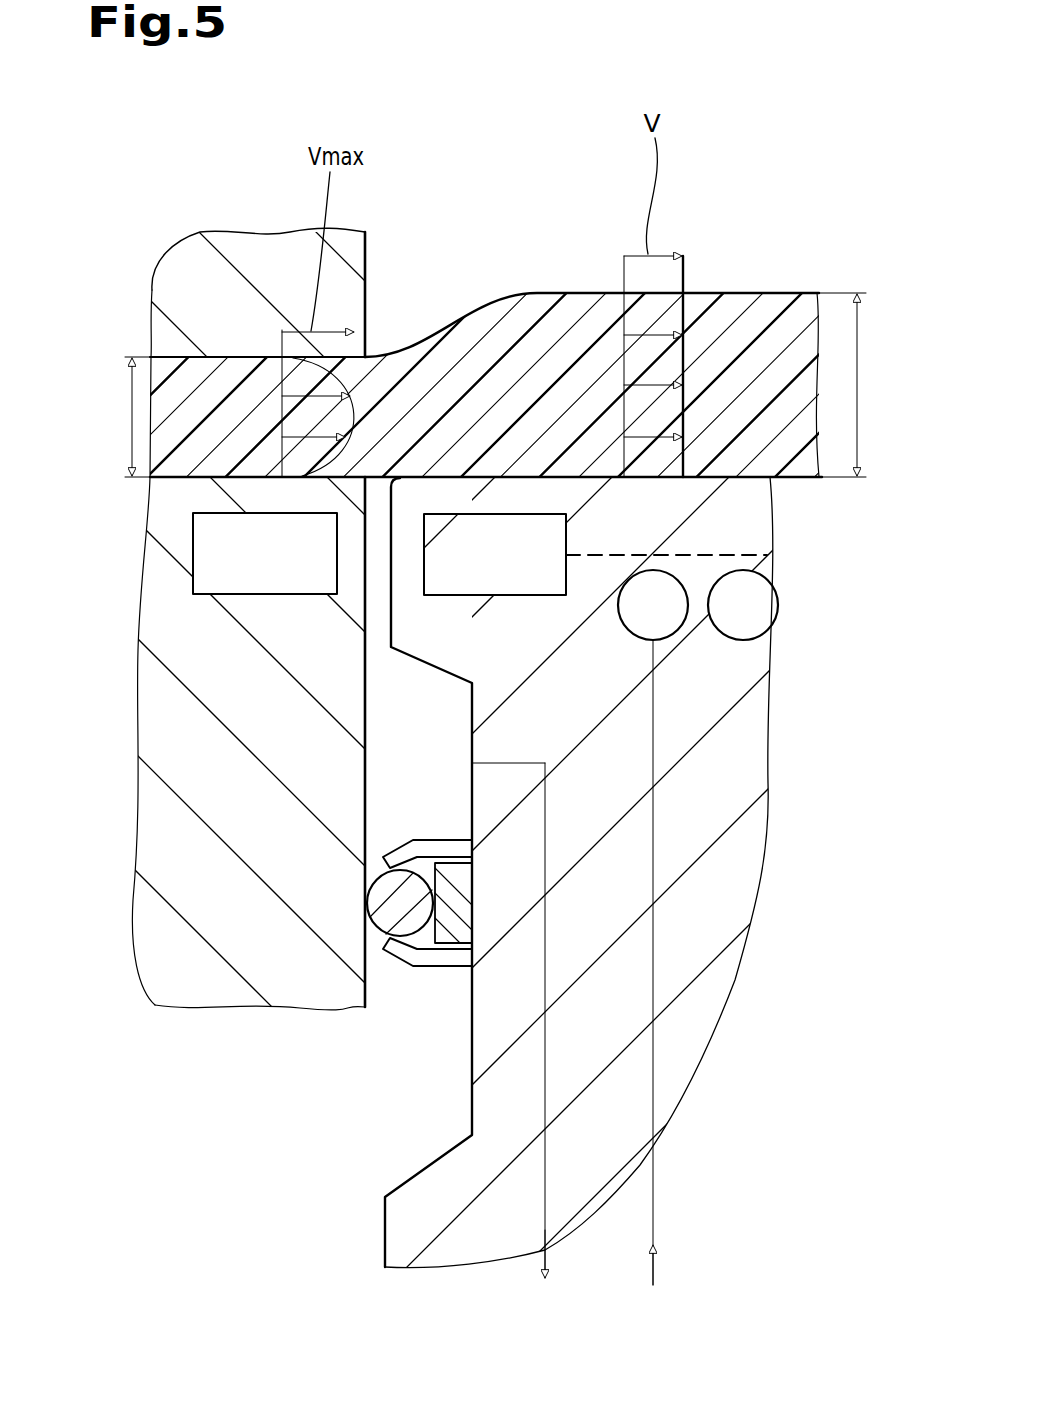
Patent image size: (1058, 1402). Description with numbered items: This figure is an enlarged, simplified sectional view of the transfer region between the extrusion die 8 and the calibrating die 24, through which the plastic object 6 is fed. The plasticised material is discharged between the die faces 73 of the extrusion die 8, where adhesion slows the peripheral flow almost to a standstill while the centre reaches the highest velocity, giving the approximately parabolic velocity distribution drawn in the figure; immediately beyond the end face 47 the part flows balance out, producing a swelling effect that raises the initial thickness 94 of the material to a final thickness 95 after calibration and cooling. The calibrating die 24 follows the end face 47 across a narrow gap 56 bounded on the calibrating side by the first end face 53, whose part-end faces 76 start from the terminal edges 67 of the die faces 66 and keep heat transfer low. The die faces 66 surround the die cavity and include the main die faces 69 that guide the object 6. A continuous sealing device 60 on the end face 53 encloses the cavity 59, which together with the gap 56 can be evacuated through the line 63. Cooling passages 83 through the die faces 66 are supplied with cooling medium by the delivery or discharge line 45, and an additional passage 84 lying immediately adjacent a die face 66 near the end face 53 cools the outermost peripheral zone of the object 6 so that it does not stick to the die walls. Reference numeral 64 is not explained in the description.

The object 6 is at (792, 320).
The extrusion die 8 is at (256, 275).
The calibrating die 24 is at (690, 810).
The delivery or discharge line 45 is at (655, 1055).
The end face 47 is at (369, 260).
The first end face 53 is at (365, 1231).
The gap 56 is at (373, 645).
The cavity 59 is at (377, 765).
The sealing device 60 is at (386, 972).
The line 63 is at (547, 1167).
The stator housing 64 is at (238, 613).
The die faces 66 is at (757, 473).
The terminal edges 67 is at (394, 475).
The main die faces 69 is at (717, 475).
The die faces 73 is at (218, 474).
The part-end faces 76 is at (387, 560).
The cooling passages 83 is at (746, 636).
The passage 84 is at (457, 587).
The initial thickness 94 is at (129, 422).
The final thickness 95 is at (860, 402).